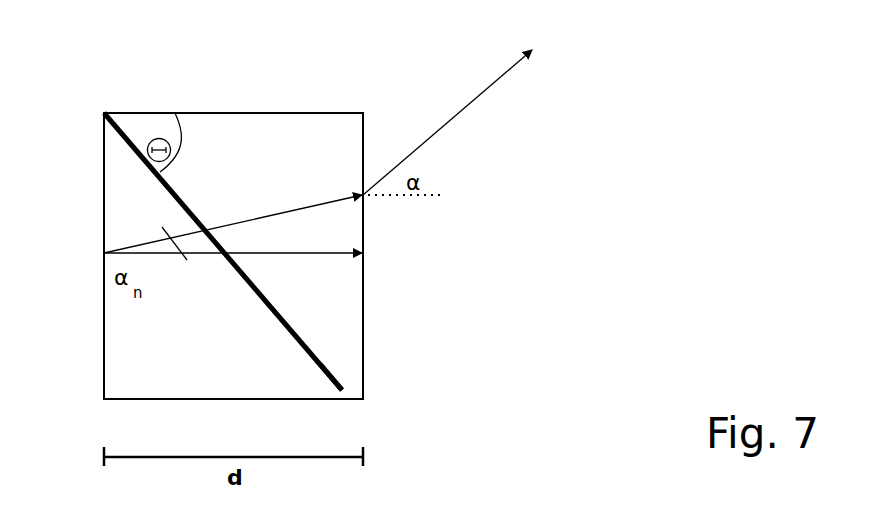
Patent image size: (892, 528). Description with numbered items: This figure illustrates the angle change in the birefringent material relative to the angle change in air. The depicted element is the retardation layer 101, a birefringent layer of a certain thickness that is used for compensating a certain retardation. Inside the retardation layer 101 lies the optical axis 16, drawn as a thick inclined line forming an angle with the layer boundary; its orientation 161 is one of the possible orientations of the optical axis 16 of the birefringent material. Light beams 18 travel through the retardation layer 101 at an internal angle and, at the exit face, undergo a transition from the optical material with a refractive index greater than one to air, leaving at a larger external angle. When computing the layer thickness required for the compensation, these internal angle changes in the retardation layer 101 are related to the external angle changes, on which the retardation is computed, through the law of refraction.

The retardation layer 101 is at (118, 197).
The optical axis 16 is at (191, 208).
The orientation of the optical axis 161 is at (336, 368).
The light beams 18 is at (491, 81).